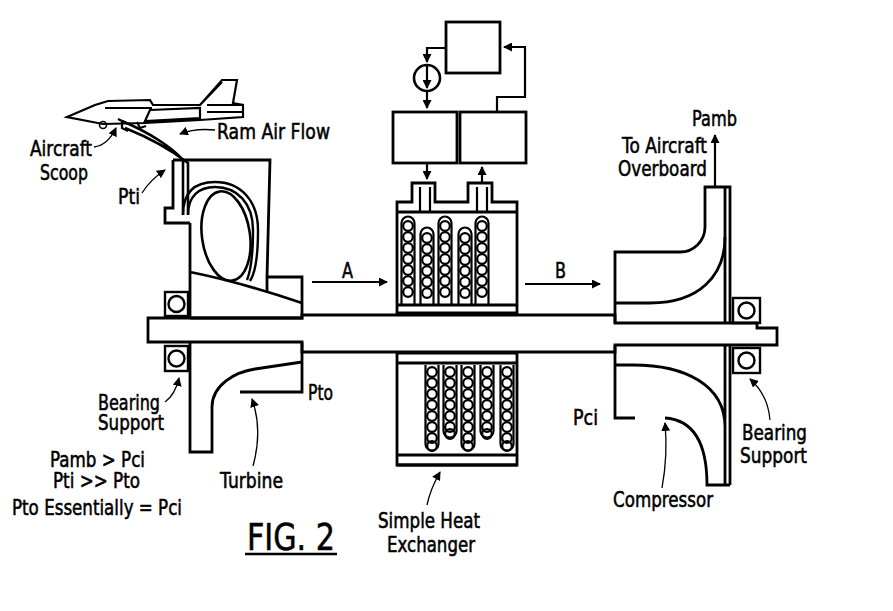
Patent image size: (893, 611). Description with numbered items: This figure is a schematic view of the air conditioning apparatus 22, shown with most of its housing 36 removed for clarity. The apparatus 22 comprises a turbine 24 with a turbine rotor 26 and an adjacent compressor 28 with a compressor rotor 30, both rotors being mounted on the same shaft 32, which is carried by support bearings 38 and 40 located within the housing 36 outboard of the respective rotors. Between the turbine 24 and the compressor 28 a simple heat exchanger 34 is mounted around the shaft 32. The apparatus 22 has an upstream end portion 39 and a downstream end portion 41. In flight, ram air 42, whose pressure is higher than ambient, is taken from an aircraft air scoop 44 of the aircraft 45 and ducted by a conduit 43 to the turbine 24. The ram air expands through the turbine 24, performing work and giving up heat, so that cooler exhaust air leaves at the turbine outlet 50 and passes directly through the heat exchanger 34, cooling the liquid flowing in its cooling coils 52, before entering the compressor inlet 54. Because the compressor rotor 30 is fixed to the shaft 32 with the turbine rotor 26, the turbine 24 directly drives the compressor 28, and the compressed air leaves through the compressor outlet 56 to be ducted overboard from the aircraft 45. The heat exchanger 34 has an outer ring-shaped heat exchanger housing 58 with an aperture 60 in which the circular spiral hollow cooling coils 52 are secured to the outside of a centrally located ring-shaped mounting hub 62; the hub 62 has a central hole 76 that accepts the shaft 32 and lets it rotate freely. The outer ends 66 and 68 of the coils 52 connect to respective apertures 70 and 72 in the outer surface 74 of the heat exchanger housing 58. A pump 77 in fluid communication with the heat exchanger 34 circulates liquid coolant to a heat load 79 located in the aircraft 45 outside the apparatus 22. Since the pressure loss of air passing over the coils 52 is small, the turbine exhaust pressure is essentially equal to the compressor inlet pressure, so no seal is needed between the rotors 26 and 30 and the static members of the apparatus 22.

The air conditioning apparatus 22 is at (296, 104).
The turbine 24 is at (272, 393).
The turbine rotor 26 is at (272, 273).
The compressor 28 is at (634, 421).
The compressor rotor 30 is at (665, 299).
The shaft 32 is at (558, 354).
The simple heat exchanger 34 is at (464, 246).
The housing 36 is at (272, 208).
The support bearing 38 is at (163, 358).
The upstream end portion 39 is at (177, 245).
The support bearing 40 is at (743, 297).
The downstream end portion 41 is at (686, 314).
The ram air 42 is at (189, 148).
The conduit 43 is at (163, 154).
The aircraft air scoop 44 is at (122, 129).
The aircraft 45 is at (137, 97).
The turbine outlet 50 is at (313, 281).
The cooling coils 52 is at (427, 402).
The compressor inlet 54 is at (615, 266).
The compressor outlet 56 is at (719, 185).
The heat exchanger housing 58 is at (485, 468).
The aperture 60 is at (412, 455).
The mounting hub 62 is at (517, 309).
The outer end 66 is at (495, 198).
The outer end 68 is at (397, 205).
The aperture 70 is at (495, 182).
The aperture 72 is at (418, 189).
The outer surface 74 is at (415, 182).
The hole 76 is at (421, 352).
The pump 77 is at (416, 66).
The heat load 79 is at (477, 74).